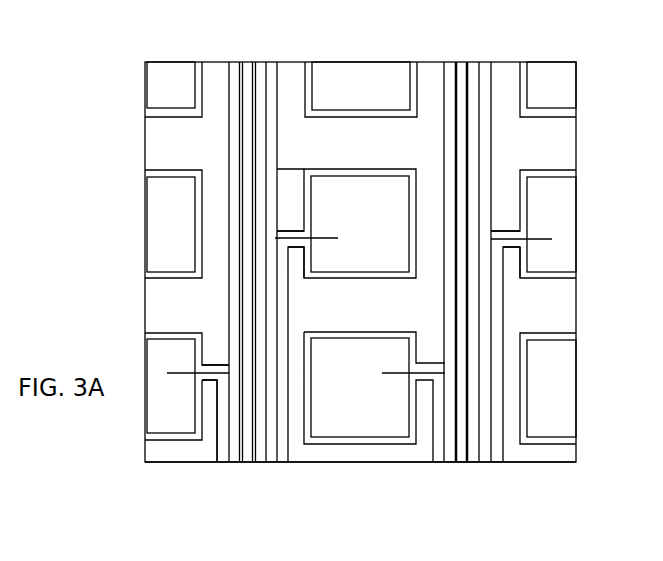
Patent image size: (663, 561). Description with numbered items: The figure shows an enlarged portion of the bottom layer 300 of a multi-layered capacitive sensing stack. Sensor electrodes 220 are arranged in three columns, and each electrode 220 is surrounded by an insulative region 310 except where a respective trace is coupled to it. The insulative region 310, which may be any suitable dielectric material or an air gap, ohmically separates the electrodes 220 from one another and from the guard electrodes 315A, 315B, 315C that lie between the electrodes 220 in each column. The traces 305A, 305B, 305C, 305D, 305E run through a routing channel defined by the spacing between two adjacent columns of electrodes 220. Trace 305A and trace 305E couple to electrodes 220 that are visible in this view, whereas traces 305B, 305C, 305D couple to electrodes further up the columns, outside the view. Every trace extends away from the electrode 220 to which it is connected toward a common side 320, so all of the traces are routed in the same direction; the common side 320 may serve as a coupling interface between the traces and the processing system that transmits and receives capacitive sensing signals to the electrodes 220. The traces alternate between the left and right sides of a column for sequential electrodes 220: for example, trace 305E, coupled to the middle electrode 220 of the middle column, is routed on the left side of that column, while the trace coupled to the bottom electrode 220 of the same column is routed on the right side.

The bottom layer 300 is at (576, 62).
The insulative region 310 is at (307, 60).
The common side 320 is at (528, 467).
The electrode 220 is at (565, 406).
The guard electrode 315A is at (197, 314).
The guard electrode 315B is at (383, 314).
The guard electrode 315C is at (565, 314).
The trace 305A is at (229, 467).
The trace 305B is at (239, 467).
The trace 305C is at (252, 467).
The trace 305D is at (265, 467).
The trace 305E is at (278, 467).